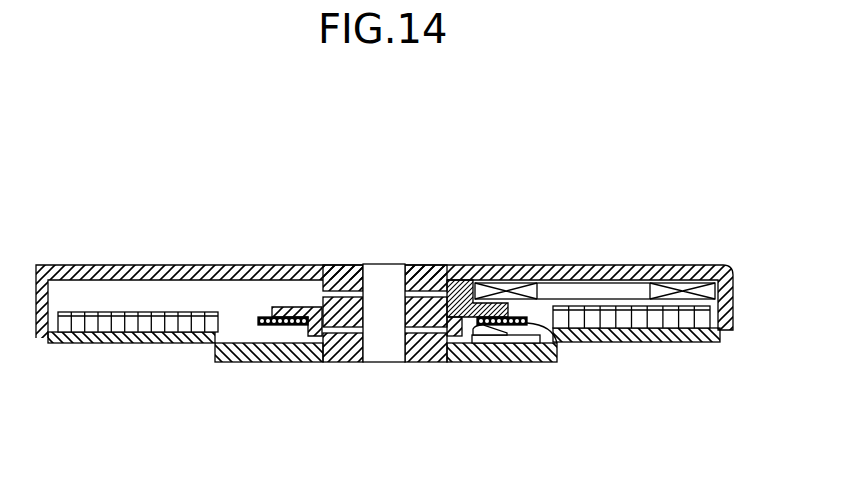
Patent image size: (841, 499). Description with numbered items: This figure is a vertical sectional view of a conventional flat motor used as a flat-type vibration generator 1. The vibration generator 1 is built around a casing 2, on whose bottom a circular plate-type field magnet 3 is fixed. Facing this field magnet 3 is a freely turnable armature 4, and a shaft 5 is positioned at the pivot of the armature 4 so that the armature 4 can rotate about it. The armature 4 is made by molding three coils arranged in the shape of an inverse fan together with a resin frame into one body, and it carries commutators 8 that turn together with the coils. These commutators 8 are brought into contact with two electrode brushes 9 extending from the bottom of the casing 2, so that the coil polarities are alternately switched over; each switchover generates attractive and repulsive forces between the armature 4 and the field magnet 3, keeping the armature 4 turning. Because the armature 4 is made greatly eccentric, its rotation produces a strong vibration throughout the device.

The vibration generator 1 is at (767, 193).
The casing 2 is at (158, 262).
The field magnet 3 is at (137, 343).
The armature 4 is at (590, 262).
The shaft 5 is at (387, 264).
The commutators 8 is at (265, 325).
The electrode brushes 9 is at (465, 338).